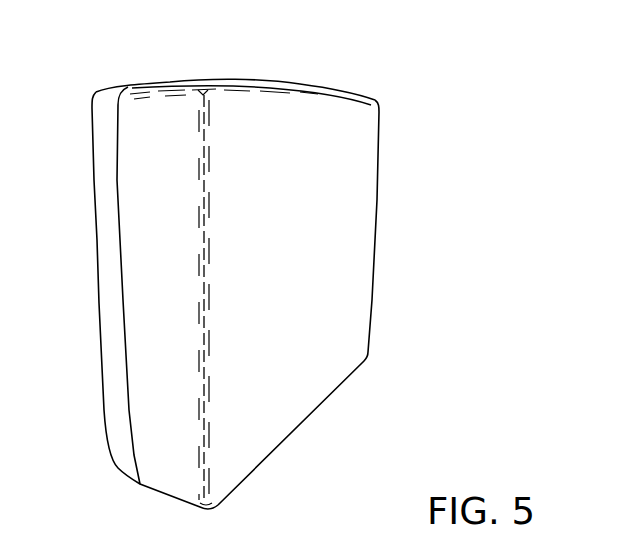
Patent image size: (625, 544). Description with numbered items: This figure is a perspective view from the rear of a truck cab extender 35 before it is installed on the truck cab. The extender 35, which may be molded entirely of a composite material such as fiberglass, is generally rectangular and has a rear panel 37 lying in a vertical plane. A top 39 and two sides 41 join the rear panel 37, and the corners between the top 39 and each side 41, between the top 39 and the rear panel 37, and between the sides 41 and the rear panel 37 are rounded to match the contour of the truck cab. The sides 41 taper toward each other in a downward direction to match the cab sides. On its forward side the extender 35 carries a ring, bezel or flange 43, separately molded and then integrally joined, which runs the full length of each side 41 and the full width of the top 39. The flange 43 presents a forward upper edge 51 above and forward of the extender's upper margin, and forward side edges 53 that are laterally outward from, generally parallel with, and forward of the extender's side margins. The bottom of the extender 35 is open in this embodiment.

The extender 35 is at (357, 78).
The rear panel 37 is at (335, 303).
The top 39 is at (268, 78).
The side 41 is at (140, 335).
The flange 43 is at (105, 197).
The forward upper edge 51 is at (113, 88).
The forward side edge 53 is at (99, 303).